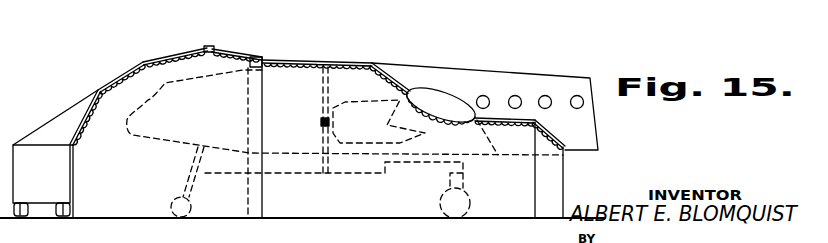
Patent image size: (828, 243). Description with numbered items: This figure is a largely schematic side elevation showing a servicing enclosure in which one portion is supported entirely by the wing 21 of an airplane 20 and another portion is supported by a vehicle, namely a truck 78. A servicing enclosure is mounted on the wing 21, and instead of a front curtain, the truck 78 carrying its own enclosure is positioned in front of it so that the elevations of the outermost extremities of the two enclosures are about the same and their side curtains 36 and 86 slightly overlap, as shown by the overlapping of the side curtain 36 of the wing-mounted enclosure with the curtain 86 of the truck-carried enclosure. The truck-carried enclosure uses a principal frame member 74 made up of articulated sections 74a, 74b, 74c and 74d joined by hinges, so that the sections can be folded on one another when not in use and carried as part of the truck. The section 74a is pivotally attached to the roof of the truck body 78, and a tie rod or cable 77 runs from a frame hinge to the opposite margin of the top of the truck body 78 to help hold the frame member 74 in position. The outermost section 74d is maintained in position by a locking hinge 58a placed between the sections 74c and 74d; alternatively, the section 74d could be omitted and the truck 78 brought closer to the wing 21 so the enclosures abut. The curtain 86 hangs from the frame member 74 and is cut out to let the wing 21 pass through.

The airplane 20 is at (558, 75).
The wing 21 is at (452, 100).
The side curtain 36 is at (300, 200).
The locking hinge 58a is at (212, 47).
The frame member 74 is at (317, 82).
The frame section 74a is at (86, 116).
The frame section 74b is at (118, 78).
The frame section 74c is at (182, 53).
The frame section 74d is at (240, 52).
The tie rod or cable 77 is at (66, 111).
The truck body 78 is at (52, 188).
The curtain 86 is at (110, 200).